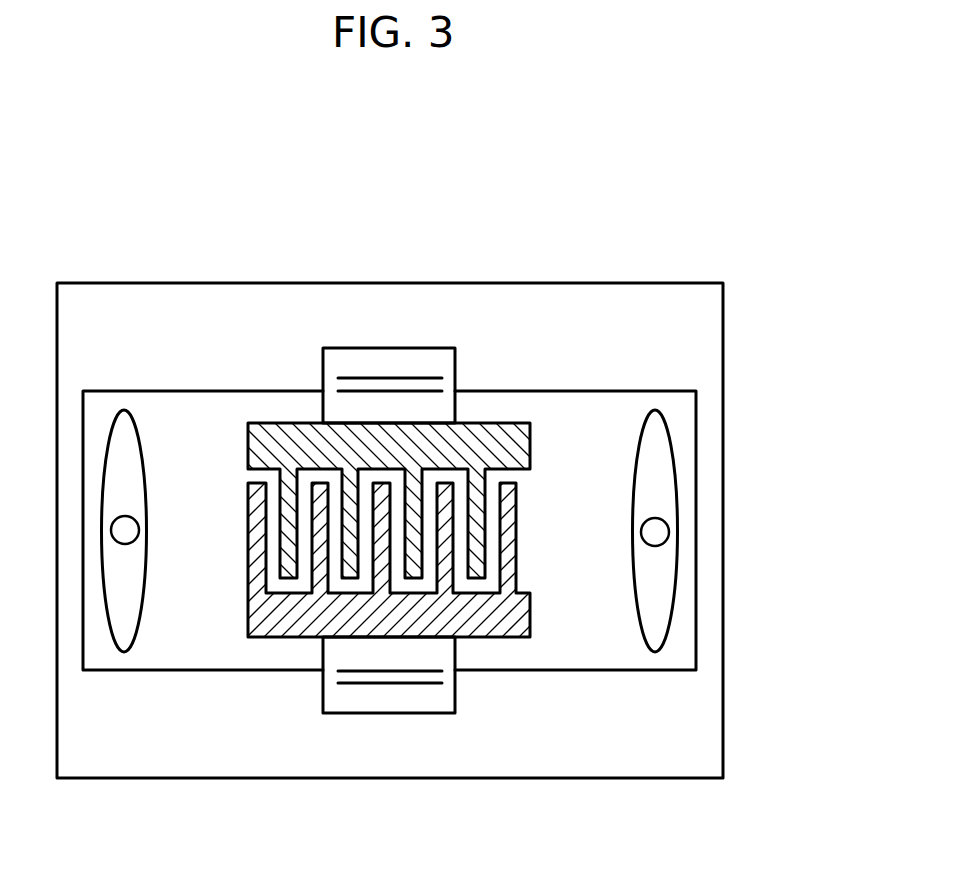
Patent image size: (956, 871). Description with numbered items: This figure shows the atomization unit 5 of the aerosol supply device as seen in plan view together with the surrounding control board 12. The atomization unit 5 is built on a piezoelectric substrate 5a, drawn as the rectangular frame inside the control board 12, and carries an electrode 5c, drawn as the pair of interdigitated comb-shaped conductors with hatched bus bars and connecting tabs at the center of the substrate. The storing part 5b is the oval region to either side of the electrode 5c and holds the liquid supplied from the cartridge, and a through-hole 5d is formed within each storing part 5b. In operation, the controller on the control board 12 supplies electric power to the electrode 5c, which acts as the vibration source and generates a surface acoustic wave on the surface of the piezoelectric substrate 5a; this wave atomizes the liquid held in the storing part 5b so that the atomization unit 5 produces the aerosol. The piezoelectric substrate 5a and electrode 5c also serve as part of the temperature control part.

The atomization unit 5 is at (684, 183).
The control board 12 is at (157, 305).
The piezoelectric substrate 5a is at (605, 400).
The storing part 5b is at (668, 447).
The electrode 5c is at (250, 550).
The through-hole 5d is at (662, 528).